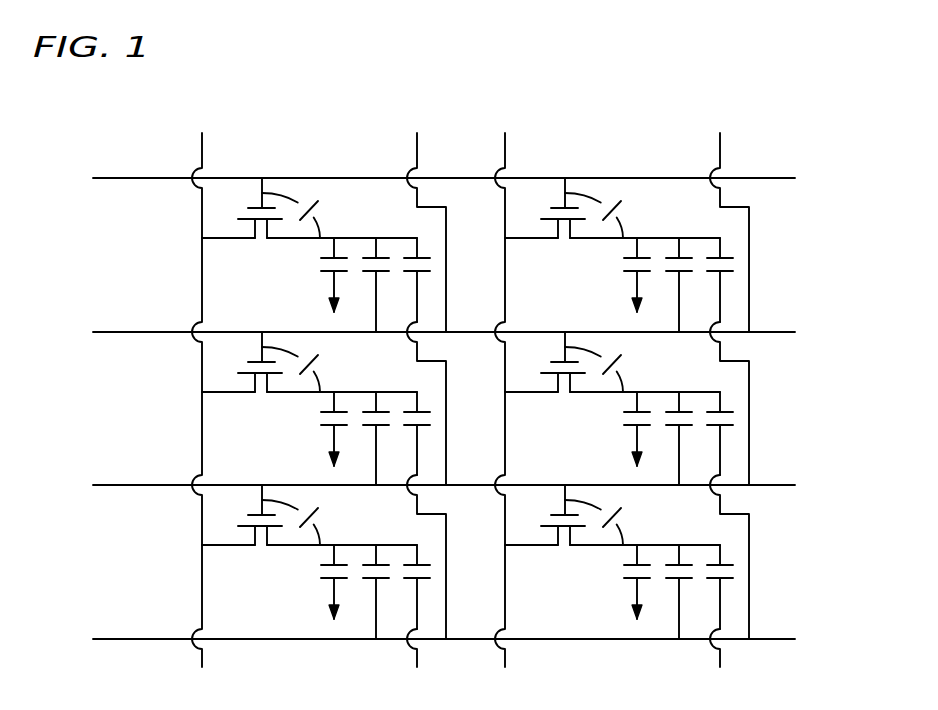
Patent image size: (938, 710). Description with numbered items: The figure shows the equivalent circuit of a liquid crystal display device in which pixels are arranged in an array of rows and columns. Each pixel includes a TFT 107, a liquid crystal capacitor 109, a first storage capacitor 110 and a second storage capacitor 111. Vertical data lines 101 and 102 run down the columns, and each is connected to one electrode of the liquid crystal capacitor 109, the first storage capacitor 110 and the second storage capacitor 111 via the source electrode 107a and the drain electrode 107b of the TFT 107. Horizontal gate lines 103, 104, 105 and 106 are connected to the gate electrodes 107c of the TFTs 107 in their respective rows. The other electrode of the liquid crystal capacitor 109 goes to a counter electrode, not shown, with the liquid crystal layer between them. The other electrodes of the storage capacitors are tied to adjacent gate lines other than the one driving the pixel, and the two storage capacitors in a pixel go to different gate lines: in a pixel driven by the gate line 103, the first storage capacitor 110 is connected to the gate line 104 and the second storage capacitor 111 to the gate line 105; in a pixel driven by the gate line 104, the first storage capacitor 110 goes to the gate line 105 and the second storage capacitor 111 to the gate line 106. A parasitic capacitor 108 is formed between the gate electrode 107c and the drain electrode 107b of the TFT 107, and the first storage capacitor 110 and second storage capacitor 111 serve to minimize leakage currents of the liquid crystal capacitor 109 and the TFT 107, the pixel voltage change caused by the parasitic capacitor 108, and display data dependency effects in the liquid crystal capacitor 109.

The data line 101 is at (202, 142).
The data line 102 is at (505, 152).
The gate line 103 is at (118, 178).
The gate line 104 is at (110, 332).
The gate line 105 is at (110, 485).
The gate line 106 is at (115, 639).
The TFT 107 is at (226, 220).
The source electrode 107a is at (223, 238).
The drain electrode 107b is at (278, 238).
The gate electrode 107c is at (263, 183).
The parasitic capacitor 108 is at (322, 185).
The liquid crystal capacitor 109 is at (316, 268).
The first storage capacitor 110 is at (368, 258).
The second storage capacitor 111 is at (413, 258).